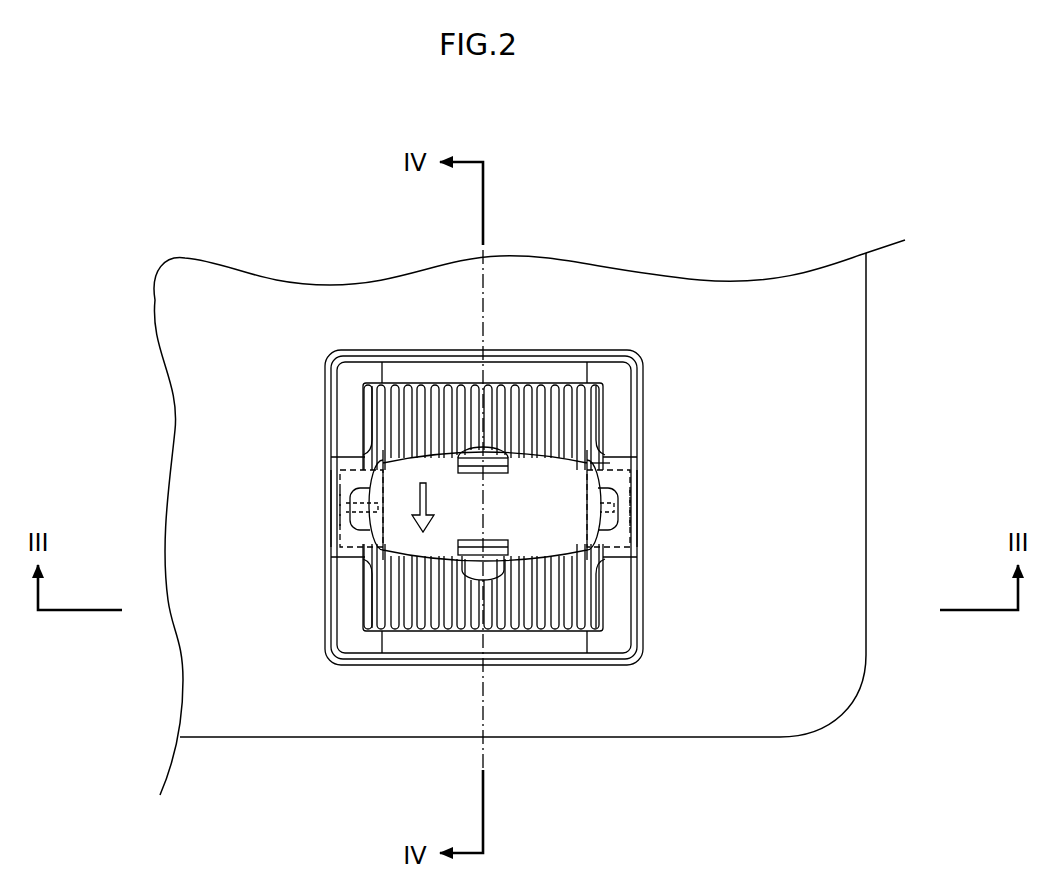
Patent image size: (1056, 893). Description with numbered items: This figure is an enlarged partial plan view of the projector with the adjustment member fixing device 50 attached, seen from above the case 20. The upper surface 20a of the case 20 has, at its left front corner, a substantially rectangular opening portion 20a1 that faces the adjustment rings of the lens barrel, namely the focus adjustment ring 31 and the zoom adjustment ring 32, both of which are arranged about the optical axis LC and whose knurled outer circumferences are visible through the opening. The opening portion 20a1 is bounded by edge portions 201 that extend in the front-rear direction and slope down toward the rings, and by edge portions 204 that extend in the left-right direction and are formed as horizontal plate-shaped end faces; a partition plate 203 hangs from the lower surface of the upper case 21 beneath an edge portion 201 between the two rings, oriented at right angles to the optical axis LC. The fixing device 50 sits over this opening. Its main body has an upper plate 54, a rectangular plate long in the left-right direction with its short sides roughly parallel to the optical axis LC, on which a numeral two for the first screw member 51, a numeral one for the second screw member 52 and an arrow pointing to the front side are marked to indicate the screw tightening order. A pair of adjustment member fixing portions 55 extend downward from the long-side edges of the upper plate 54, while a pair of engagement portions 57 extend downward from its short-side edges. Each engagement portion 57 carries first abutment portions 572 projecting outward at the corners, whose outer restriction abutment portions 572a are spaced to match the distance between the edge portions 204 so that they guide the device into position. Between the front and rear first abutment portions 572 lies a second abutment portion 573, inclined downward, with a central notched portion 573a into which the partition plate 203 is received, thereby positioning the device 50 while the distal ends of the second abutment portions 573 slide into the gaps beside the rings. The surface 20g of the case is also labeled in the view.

The case 20 is at (840, 299).
The upper surface 20a is at (827, 341).
The opening portion 20a1 is at (610, 463).
The front surface of body 20g is at (866, 743).
The upper case 21 is at (830, 440).
The focus adjustment ring 31 is at (550, 630).
The zoom adjustment ring 32 is at (552, 390).
The adjustment member fixing device 50 is at (350, 440).
The first screw member 51 is at (478, 575).
The second screw member 52 is at (617, 527).
The upper plate 54 is at (400, 497).
The adjustment member fixing portions 55 is at (462, 415).
The engagement portions 57 is at (322, 346).
The first abutment portion 572 is at (345, 408).
The restriction abutment portion 572a is at (362, 360).
The second abutment portion 573 is at (613, 487).
The notched portion 573a is at (355, 516).
The edge portions 201 is at (355, 546).
The partition plate 203 is at (352, 508).
The edge portions 204 is at (507, 352).
The optical axis LC is at (483, 305).